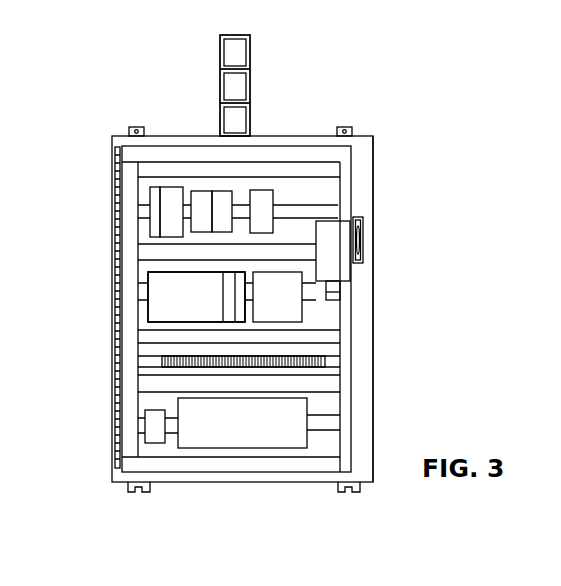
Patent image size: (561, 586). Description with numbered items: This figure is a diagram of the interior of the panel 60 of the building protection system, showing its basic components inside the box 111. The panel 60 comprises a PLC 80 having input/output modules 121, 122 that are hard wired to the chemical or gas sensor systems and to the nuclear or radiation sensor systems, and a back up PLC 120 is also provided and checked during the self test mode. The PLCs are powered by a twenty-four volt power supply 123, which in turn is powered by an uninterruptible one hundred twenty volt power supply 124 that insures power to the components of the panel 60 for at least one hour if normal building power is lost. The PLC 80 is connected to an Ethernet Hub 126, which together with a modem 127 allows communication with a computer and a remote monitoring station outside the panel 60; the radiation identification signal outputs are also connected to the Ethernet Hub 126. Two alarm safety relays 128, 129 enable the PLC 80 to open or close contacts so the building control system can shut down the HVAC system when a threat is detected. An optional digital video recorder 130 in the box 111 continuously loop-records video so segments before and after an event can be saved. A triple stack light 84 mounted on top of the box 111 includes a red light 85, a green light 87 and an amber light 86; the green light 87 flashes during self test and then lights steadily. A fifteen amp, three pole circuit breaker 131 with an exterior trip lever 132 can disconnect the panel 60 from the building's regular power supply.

The panel 60 is at (375, 153).
The box 111 is at (373, 203).
The triple stack light 84 is at (230, 77).
The red light 85 is at (250, 48).
The green light 87 is at (250, 85).
The amber light 86 is at (250, 118).
The Ethernet Hub 126 is at (153, 213).
The modem 127 is at (172, 208).
The alarm safety relay 128 is at (200, 210).
The alarm safety relay 129 is at (222, 210).
The digital video recorder 130 is at (262, 212).
The PLC 80 is at (200, 296).
The input/output module 121 is at (230, 296).
The input/output module 122 is at (240, 295).
The back up PLC 120 is at (287, 294).
The circuit breaker 131 is at (343, 268).
The exterior trip lever 132 is at (365, 240).
The 24 volt power supply 123 is at (155, 428).
The uninterruptible power supply 124 is at (243, 427).